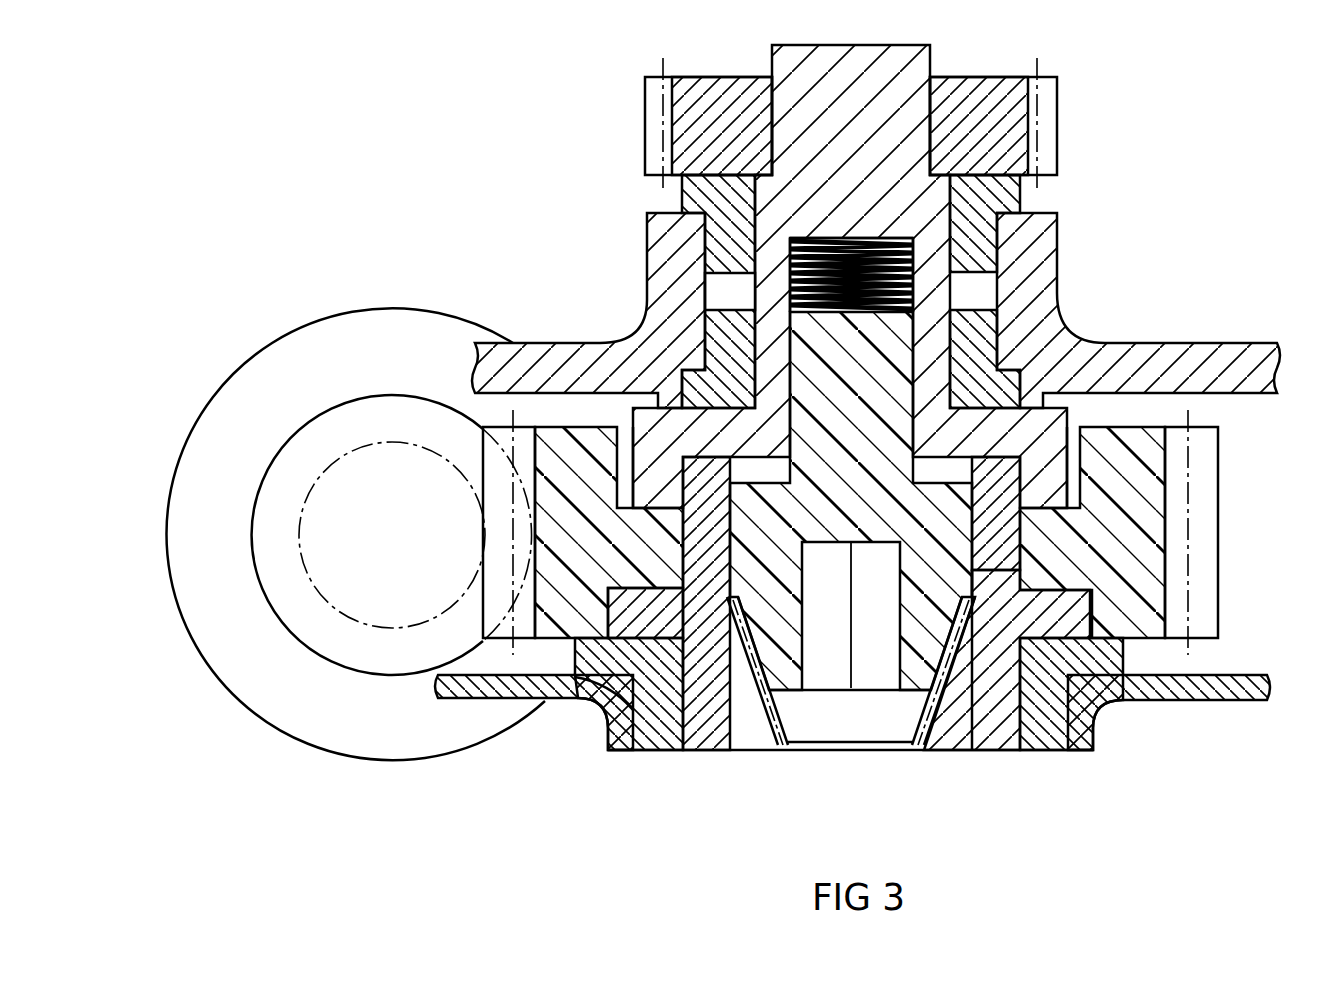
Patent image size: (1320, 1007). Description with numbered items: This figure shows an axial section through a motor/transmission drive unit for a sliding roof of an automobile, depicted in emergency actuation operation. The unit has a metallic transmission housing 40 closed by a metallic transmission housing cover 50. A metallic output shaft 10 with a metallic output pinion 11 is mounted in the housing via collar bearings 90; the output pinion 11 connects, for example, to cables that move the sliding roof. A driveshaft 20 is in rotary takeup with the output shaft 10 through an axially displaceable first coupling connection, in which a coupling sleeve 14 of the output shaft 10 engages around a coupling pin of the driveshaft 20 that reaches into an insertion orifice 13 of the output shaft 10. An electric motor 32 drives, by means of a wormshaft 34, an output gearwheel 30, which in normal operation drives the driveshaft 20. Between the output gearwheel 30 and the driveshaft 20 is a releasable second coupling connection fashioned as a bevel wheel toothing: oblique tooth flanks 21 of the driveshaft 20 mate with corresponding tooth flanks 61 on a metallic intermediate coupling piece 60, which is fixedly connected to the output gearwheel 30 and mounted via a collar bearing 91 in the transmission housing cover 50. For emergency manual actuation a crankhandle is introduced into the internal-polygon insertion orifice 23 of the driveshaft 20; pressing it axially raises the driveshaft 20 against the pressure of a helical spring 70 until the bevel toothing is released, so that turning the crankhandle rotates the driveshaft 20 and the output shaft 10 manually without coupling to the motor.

The output shaft 10 is at (895, 133).
The output pinion 11 is at (990, 103).
The insertion orifice 13 is at (997, 230).
The coupling sleeve 14 is at (997, 283).
The driveshaft 20 is at (957, 572).
The tooth flanks 21 is at (912, 708).
The insertion orifice 23 is at (862, 398).
The output gearwheel 30 is at (1130, 490).
The electric motor 32 is at (265, 343).
The wormshaft 34 is at (250, 538).
The transmission housing 40 is at (1222, 378).
The transmission housing cover 50 is at (1190, 690).
The intermediate coupling piece 60 is at (1008, 713).
The tooth flanks 61 is at (950, 713).
The helical spring 70 is at (905, 246).
The collar bearings 90 is at (730, 355).
The collar bearing 91 is at (657, 707).